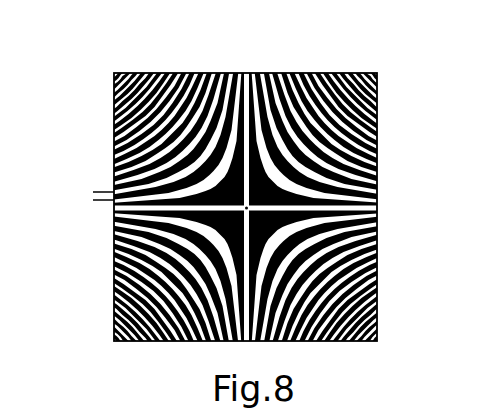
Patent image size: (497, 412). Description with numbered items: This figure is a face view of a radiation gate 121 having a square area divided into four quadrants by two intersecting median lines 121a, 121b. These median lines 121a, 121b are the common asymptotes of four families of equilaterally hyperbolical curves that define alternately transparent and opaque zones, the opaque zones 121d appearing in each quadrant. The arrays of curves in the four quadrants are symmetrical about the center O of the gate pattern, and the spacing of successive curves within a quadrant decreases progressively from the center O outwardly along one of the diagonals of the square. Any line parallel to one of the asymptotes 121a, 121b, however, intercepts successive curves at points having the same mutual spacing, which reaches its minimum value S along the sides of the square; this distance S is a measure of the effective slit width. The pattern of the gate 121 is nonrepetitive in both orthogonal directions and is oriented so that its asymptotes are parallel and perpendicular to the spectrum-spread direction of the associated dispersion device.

The gate 121 is at (105, 252).
The median line 121a is at (241, 201).
The median line 121b is at (235, 72).
The opaque zone 121d is at (279, 171).
The center O is at (241, 202).
The spacing S is at (92, 192).